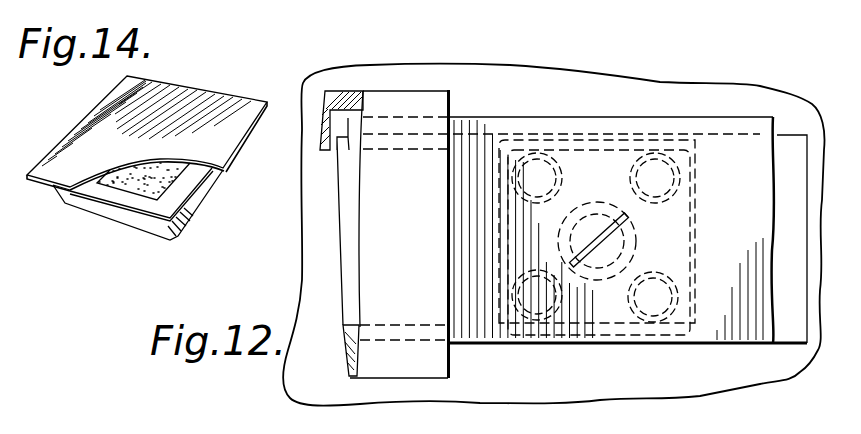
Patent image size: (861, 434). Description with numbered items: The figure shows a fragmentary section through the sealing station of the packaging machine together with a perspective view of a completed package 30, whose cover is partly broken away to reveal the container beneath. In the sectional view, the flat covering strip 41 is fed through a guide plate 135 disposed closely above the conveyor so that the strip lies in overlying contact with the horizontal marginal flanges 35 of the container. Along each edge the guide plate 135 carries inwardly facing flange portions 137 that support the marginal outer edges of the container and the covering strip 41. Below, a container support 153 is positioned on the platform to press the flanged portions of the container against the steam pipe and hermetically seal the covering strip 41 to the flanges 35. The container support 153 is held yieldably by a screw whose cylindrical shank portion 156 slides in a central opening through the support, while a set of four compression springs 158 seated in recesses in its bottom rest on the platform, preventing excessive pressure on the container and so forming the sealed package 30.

In FIG. 14, the package 30 is at (100, 244).
In FIG. 12, the marginal flanges 35 is at (342, 143).
In FIG. 12, the covering strip 41 is at (342, 140).
In FIG. 12, the guide plate 135 is at (395, 97).
In FIG. 12, the flange portions 137 is at (343, 352).
In FIG. 12, the container support 153 is at (657, 343).
In FIG. 12, the cylindrical shank portion 156 is at (620, 242).
In FIG. 12, the compression springs 158 is at (673, 193).